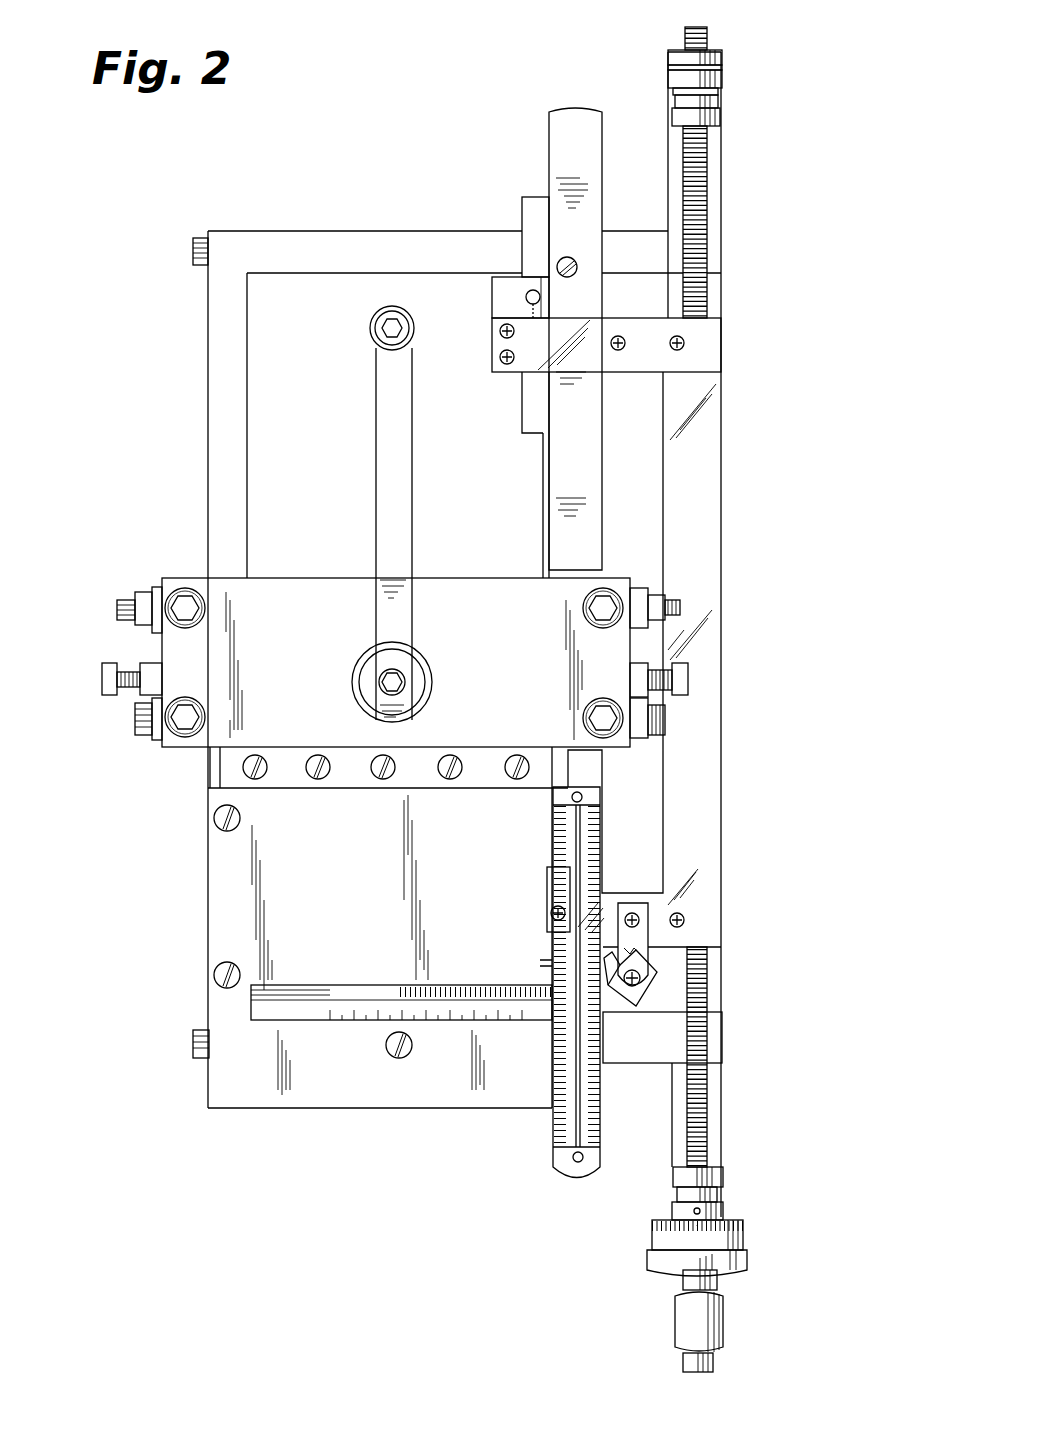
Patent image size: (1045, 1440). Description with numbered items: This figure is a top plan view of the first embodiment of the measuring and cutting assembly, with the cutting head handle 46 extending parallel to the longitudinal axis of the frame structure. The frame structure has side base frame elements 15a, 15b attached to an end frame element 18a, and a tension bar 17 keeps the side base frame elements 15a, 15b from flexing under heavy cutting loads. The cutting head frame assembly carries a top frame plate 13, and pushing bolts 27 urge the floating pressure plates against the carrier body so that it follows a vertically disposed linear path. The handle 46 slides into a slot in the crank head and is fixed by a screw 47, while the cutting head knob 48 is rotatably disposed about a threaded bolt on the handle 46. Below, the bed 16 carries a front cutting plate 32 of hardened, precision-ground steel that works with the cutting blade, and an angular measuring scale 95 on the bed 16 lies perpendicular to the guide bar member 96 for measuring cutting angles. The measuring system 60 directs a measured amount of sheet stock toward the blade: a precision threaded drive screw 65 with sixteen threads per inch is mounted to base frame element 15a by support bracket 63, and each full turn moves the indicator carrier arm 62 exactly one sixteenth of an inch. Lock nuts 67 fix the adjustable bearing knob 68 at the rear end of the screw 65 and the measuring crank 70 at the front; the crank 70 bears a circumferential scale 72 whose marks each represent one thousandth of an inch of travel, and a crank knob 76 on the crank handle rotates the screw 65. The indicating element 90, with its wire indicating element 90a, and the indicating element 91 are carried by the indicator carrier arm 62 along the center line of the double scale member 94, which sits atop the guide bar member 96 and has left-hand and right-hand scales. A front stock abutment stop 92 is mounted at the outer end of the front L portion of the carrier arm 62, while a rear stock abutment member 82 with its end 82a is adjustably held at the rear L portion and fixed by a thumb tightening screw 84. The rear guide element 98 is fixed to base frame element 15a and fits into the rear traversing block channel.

The top frame plate 13 is at (225, 585).
The side base frame element 15a is at (545, 543).
The side base frame element 15b is at (216, 460).
The bed 16 is at (333, 1103).
The tension bar 17 is at (118, 603).
The end frame element 18a is at (290, 232).
The pushing bolt 27 is at (120, 688).
The front cutting plate 32 is at (237, 777).
The handle 46 is at (380, 416).
The screw 47 is at (385, 683).
The cutting head knob 48 is at (375, 328).
The measuring system 60 is at (659, 616).
The indicator carrier arm 62 is at (710, 465).
The support bracket 63 is at (718, 160).
The precision threaded drive screw 65 is at (706, 212).
The lock nut 67 is at (717, 112).
The adjustable bearing knob 68 is at (722, 58).
The measuring crank 70 is at (694, 1160).
The circumferential scale 72 is at (745, 1232).
The crank knob 76 is at (718, 1312).
The rear stock abutment member 82 is at (522, 200).
The end of rear abutment member 82a is at (533, 427).
The thumb tightening screw 84 is at (525, 293).
The indicating element 90 is at (636, 1015).
The wire indicating element 90a is at (598, 943).
The indicating element 91 is at (638, 947).
The front stock abutment stop 92 is at (565, 880).
The double scale member 94 is at (552, 1133).
The angular measuring scale 95 is at (295, 1005).
The guide bar member 96 is at (552, 970).
The rear guide element 98 is at (567, 115).